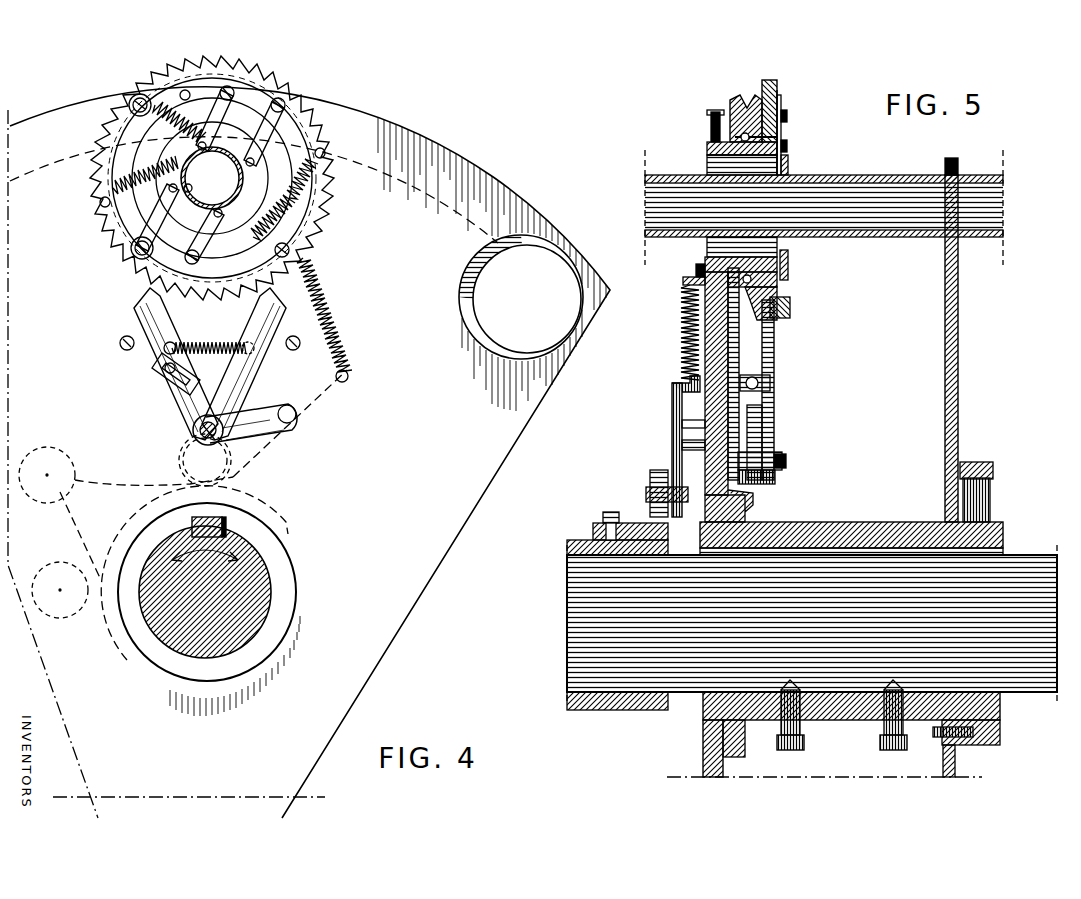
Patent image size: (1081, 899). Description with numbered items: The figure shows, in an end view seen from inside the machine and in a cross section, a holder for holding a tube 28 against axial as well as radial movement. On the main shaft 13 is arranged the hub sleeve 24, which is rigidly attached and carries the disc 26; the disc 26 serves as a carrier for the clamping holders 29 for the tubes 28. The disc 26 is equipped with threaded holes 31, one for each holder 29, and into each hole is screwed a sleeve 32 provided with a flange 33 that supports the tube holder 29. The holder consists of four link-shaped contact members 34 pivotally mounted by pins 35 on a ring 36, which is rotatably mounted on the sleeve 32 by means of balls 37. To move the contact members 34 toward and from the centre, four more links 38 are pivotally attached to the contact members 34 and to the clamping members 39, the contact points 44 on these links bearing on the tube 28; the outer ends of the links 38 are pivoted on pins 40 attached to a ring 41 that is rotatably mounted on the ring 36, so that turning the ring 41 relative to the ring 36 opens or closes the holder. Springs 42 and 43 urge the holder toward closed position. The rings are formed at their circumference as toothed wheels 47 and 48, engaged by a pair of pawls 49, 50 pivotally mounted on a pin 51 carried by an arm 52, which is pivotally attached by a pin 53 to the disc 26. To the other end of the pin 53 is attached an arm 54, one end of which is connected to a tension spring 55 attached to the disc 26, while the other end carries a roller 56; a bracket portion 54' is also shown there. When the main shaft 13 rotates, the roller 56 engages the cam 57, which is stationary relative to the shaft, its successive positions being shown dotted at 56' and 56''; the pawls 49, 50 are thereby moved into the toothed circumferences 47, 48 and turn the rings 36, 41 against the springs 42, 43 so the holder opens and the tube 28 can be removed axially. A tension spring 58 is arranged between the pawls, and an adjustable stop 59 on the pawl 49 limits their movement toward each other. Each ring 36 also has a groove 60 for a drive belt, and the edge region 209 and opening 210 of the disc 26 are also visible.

In FIG. 4, the main shaft 13 is at (170, 645).
In FIG. 5, the main shaft 13 is at (1022, 694).
In FIG. 5, the hub sleeve 24 is at (888, 523).
In FIG. 4, the disc 26 is at (498, 188).
In FIG. 5, the disc 26 is at (703, 750).
In FIG. 4, the tube 28 is at (192, 213).
In FIG. 5, the tube 28 is at (884, 176).
In FIG. 5, the holder 29 is at (783, 85).
In FIG. 5, the threaded hole 31 is at (705, 265).
In FIG. 5, the sleeve 32 is at (708, 154).
In FIG. 5, the flange 33 is at (779, 138).
In FIG. 4, the contact member 34 is at (178, 64).
In FIG. 5, the contact member 34 is at (788, 148).
In FIG. 4, the pin 35 is at (240, 92).
In FIG. 5, the pin 35 is at (787, 118).
In FIG. 4, the ring 36 is at (304, 150).
In FIG. 5, the ring 36 is at (777, 290).
In FIG. 5, the ball 37 is at (710, 124).
In FIG. 4, the link 38 is at (138, 96).
In FIG. 5, the link 38 is at (788, 170).
In FIG. 4, the clamping member 39 is at (212, 178).
In FIG. 4, the pin 40 is at (128, 110).
In FIG. 5, the pin 40 is at (790, 314).
In FIG. 4, the ring 41 is at (100, 202).
In FIG. 5, the ring 41 is at (782, 96).
In FIG. 4, the spring 42 is at (156, 112).
In FIG. 4, the spring 43 is at (286, 212).
In FIG. 4, the contact point 44 is at (192, 188).
In FIG. 4, the toothed wheel 47 is at (312, 141).
In FIG. 4, the toothed wheel 48 is at (328, 156).
In FIG. 5, the toothed wheel 48 is at (768, 81).
In FIG. 4, the pawl 49 is at (138, 322).
In FIG. 5, the pawl 49 is at (740, 357).
In FIG. 4, the pawl 50 is at (272, 323).
In FIG. 5, the pawl 50 is at (775, 420).
In FIG. 4, the pin 51 is at (198, 430).
In FIG. 5, the pin 51 is at (786, 462).
In FIG. 4, the arm 52 is at (266, 440).
In FIG. 5, the arm 52 is at (755, 485).
In FIG. 4, the pin 53 is at (298, 432).
In FIG. 5, the pin 53 is at (680, 424).
In FIG. 4, the arm 54 is at (301, 423).
In FIG. 5, the bracket 54' is at (665, 385).
In FIG. 4, the tension spring 55 is at (342, 336).
In FIG. 5, the tension spring 55 is at (680, 326).
In FIG. 4, the roller 56 is at (184, 460).
In FIG. 5, the roller 56 is at (652, 484).
In FIG. 4, the roller position 56' is at (47, 458).
In FIG. 4, the roller position 56'' is at (55, 576).
In FIG. 4, the cam 57 is at (103, 470).
In FIG. 5, the cam 57 is at (644, 522).
In FIG. 4, the tension spring 58 is at (206, 344).
In FIG. 5, the tension spring 58 is at (770, 393).
In FIG. 4, the adjustable stop 59 is at (198, 392).
In FIG. 5, the groove 60 is at (738, 97).
In FIG. 4, the inner edge of plate 209 is at (490, 230).
In FIG. 4, the opening / frame plate 210 is at (488, 336).
In FIG. 5, the opening / frame plate 210 is at (959, 242).